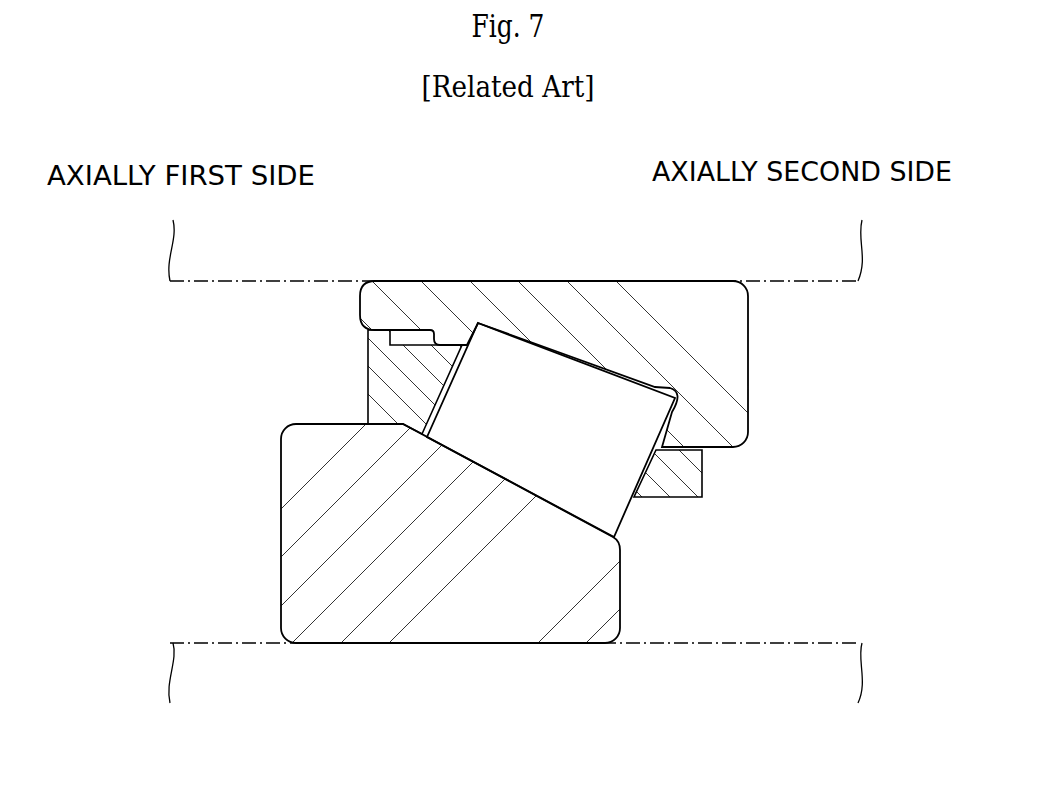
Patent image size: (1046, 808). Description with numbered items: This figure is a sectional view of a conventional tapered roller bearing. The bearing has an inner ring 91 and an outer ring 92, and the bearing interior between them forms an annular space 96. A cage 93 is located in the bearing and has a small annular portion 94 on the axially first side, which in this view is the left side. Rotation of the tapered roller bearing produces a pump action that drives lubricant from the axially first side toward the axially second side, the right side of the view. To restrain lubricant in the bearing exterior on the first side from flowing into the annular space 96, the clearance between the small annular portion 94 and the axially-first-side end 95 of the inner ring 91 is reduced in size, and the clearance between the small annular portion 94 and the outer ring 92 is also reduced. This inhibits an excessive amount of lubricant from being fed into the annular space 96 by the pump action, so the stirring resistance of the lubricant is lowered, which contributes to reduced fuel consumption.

The inner ring 91 is at (593, 281).
The outer ring 92 is at (468, 643).
The cage 93 is at (366, 400).
The small annular portion 94 is at (385, 372).
The axially-first-side end 95 is at (373, 307).
The annular space 96 is at (517, 358).